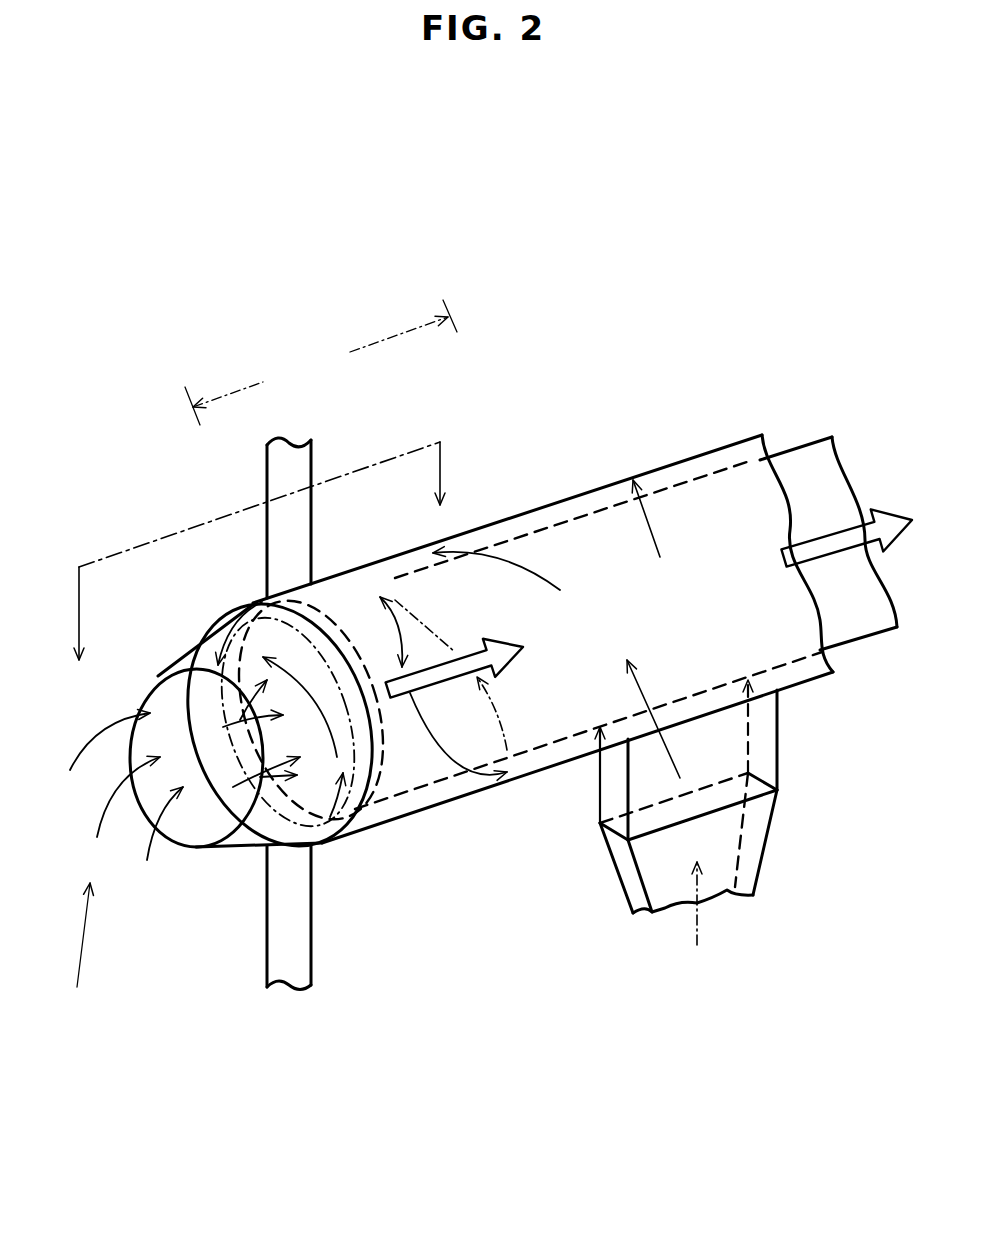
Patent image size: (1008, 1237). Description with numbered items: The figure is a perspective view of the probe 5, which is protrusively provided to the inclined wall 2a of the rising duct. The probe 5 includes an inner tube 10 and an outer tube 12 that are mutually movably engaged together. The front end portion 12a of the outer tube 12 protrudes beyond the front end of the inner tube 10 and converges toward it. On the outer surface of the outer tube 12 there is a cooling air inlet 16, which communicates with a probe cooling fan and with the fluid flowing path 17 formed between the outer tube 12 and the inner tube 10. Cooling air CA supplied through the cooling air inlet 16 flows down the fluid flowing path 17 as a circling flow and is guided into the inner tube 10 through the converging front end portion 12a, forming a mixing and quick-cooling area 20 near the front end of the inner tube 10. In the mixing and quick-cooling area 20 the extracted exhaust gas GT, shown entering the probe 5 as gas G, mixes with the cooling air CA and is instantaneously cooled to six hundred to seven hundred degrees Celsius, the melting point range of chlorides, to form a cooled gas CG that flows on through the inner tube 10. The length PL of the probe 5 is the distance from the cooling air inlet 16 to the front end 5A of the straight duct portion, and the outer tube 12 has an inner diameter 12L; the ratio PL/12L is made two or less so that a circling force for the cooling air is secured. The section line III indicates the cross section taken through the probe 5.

The inclined wall 2a is at (313, 953).
The probe 5 is at (684, 456).
The front end of the straight duct portion 5A is at (350, 800).
The inner tube 10 is at (807, 440).
The outer tube 12 is at (758, 434).
The front end portion of the outer tube 12a is at (330, 843).
The inner diameter of the outer tube 12L is at (713, 710).
The cooling air inlet 16 is at (697, 718).
The fluid flowing path 17 is at (427, 800).
The mixing and quick-cooling area 20 is at (227, 763).
The fuel gas flow G is at (83, 937).
The extracted exhaust gas GT is at (112, 795).
The cooling air CA is at (528, 565).
The cooled gas CG is at (837, 557).
The length of the probe PL is at (321, 362).
The section line III- III is at (259, 534).